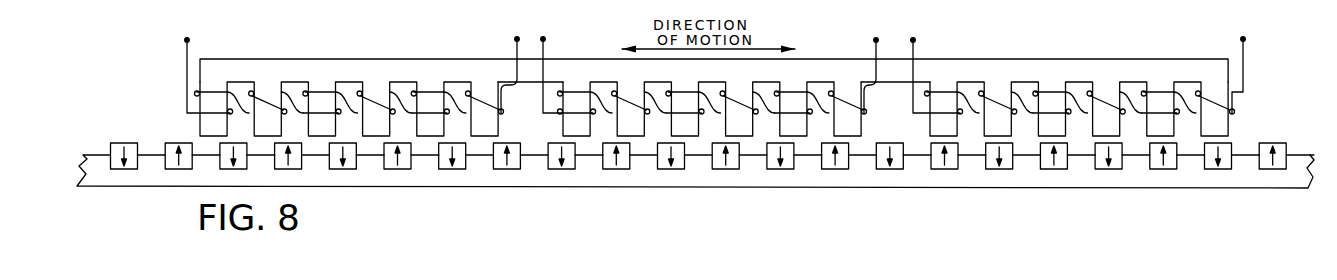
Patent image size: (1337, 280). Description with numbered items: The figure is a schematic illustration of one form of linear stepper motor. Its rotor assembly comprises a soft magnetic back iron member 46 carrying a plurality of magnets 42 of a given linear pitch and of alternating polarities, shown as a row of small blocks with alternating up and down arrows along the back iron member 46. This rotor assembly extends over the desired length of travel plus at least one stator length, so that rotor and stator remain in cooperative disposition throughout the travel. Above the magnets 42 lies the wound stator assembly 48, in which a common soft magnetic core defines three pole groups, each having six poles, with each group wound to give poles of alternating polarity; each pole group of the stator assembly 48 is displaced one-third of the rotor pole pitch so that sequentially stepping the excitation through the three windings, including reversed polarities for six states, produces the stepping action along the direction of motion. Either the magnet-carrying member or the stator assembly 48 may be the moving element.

The magnets 42 is at (437, 154).
The soft magnetic back iron member 46 is at (472, 170).
The stator coil assembly 48 is at (1030, 74).